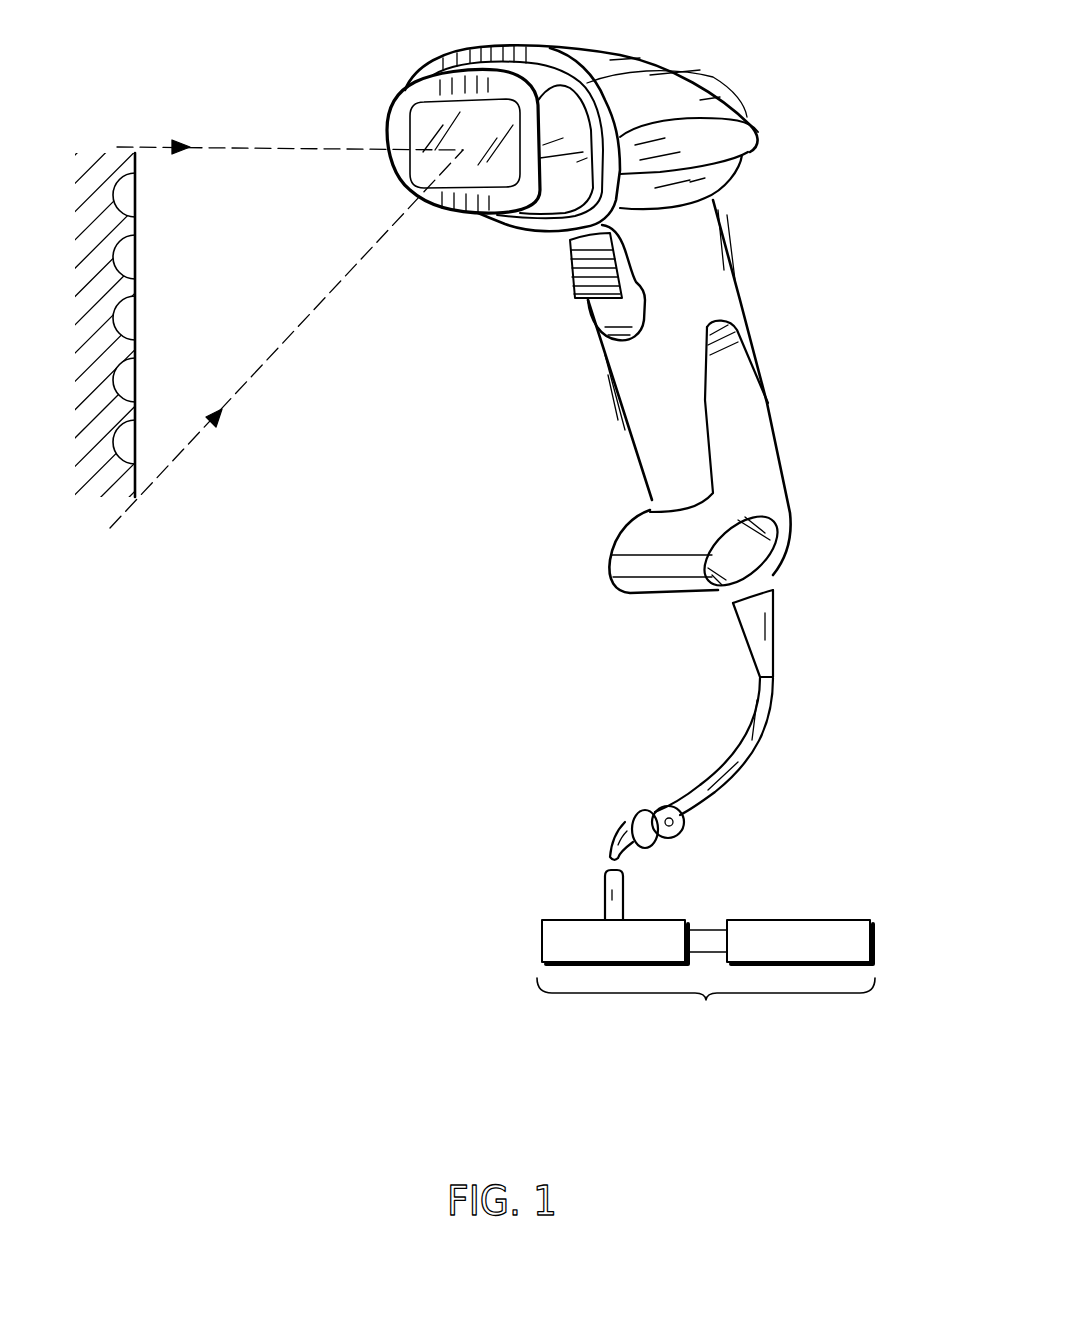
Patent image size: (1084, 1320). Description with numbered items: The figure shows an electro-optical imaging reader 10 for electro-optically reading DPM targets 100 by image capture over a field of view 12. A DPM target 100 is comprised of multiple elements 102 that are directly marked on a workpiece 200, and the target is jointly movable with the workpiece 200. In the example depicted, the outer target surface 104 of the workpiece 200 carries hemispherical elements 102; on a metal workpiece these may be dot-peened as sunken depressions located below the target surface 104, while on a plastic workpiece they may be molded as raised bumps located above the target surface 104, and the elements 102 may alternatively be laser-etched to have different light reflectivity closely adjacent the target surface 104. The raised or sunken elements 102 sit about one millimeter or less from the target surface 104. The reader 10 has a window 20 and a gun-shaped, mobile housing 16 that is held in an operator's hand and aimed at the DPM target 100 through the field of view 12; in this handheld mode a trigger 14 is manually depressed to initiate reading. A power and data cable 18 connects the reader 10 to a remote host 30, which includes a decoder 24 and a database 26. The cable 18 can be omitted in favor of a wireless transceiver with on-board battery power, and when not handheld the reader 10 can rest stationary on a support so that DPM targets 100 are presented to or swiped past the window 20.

The electro-optical reader 10 is at (541, 276).
The field of view 12 is at (321, 301).
The trigger 14 is at (590, 273).
The housing 16 is at (700, 102).
The power and data cable 18 is at (775, 632).
The window 20 is at (394, 172).
The decoder 24 is at (542, 942).
The database 26 is at (875, 943).
The remote host 30 is at (706, 1019).
The DPM target 100 is at (135, 411).
The elements 102 is at (132, 312).
The outer target surface 104 is at (136, 163).
The workpiece 200 is at (178, 323).